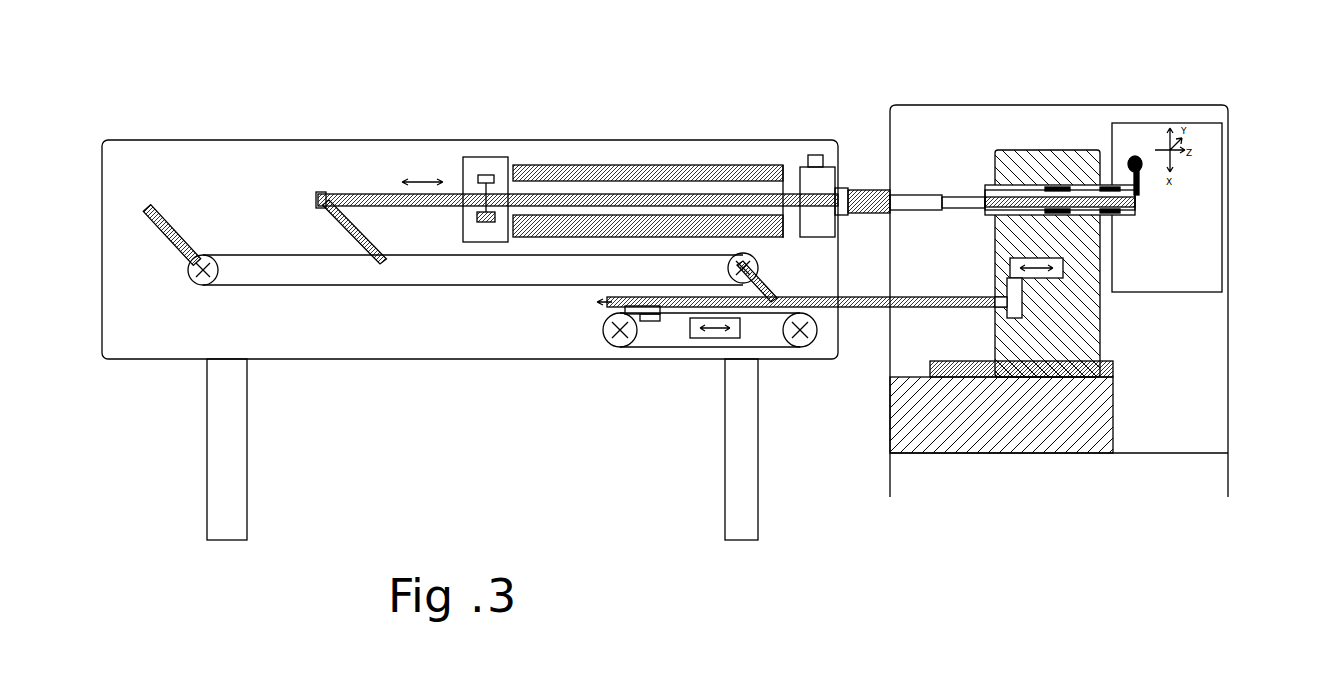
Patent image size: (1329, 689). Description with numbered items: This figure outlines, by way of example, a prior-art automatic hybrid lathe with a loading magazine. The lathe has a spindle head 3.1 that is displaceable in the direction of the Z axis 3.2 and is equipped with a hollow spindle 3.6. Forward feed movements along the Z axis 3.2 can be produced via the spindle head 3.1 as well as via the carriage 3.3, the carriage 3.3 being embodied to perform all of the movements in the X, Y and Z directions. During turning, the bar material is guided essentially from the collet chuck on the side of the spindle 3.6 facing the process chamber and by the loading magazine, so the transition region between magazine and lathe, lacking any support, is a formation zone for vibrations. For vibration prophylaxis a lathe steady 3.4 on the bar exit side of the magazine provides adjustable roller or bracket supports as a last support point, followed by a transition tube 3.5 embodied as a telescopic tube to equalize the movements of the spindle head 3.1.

The spindle head 3.1 is at (1015, 150).
The Z axis 3.2 is at (1100, 288).
The carriage 3.3 is at (1147, 172).
The lathe steady 3.4 is at (817, 155).
The transition tube 3.5 is at (852, 188).
The hollow spindle 3.6 is at (1055, 153).